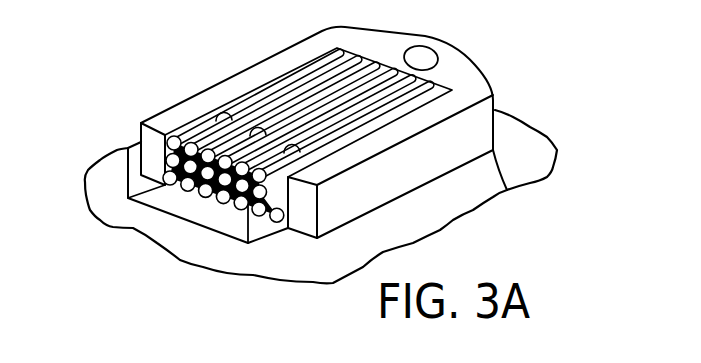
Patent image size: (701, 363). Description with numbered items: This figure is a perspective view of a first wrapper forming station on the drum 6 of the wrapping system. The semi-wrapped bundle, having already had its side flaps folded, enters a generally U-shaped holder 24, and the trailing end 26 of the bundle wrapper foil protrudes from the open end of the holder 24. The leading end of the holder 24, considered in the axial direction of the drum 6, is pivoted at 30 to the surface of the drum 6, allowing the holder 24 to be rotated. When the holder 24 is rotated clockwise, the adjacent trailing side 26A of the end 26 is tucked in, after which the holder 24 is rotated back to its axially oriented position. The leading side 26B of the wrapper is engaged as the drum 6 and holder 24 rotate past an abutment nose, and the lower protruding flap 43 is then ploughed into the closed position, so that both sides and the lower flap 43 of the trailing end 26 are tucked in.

The drum 6 is at (548, 144).
The holder 24 is at (494, 153).
The trailing end 26 is at (227, 241).
The trailing side 26A is at (133, 173).
The leading side 26B is at (271, 230).
The pivot 30 is at (430, 55).
The lower protruding flap 43 is at (212, 228).